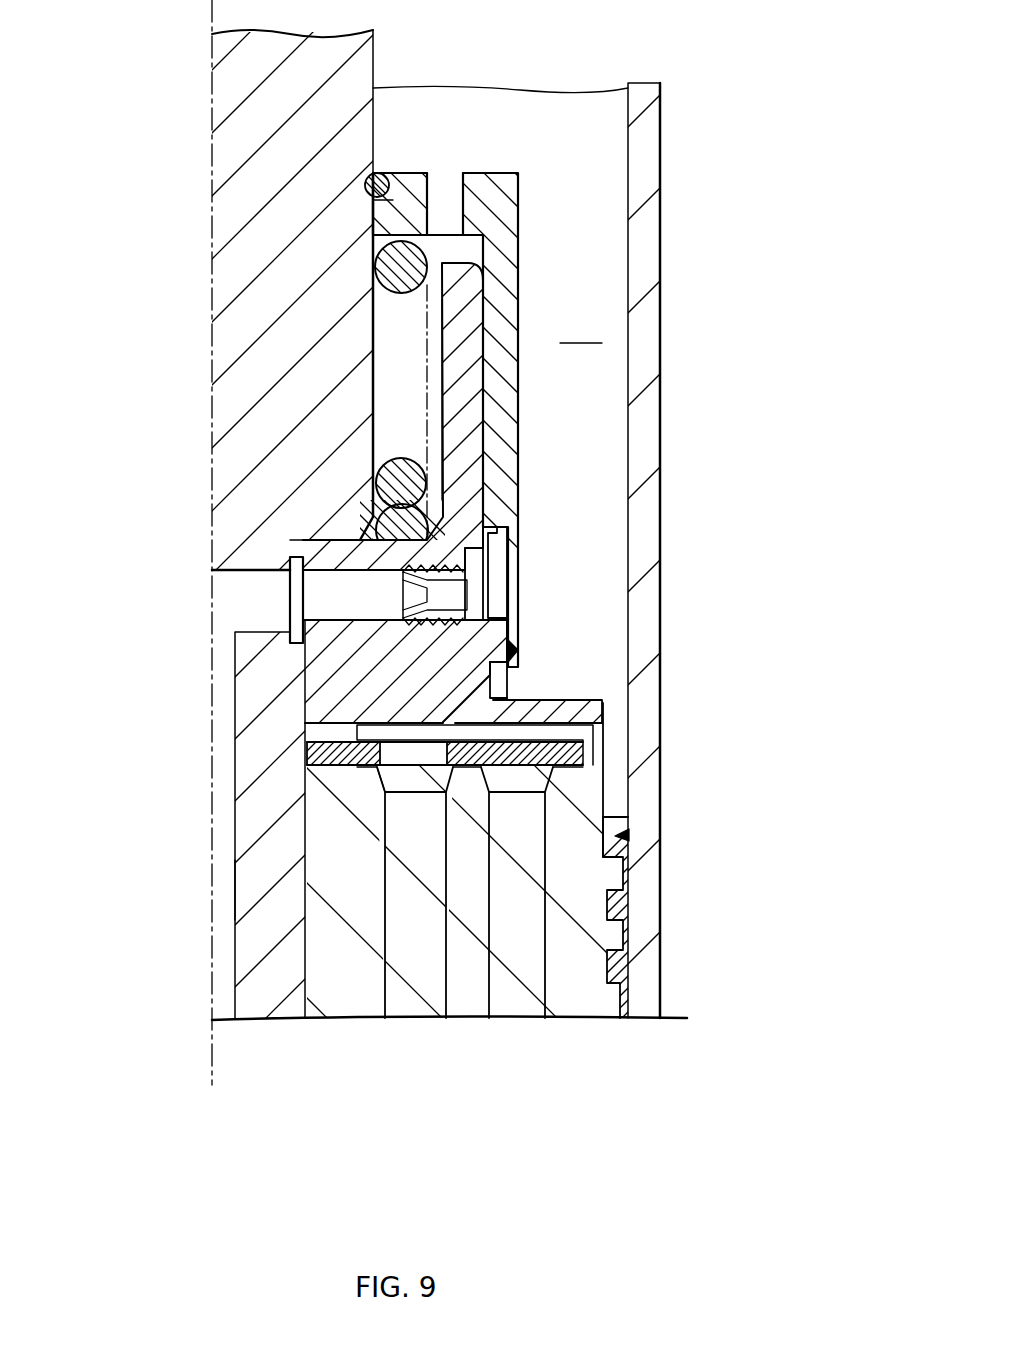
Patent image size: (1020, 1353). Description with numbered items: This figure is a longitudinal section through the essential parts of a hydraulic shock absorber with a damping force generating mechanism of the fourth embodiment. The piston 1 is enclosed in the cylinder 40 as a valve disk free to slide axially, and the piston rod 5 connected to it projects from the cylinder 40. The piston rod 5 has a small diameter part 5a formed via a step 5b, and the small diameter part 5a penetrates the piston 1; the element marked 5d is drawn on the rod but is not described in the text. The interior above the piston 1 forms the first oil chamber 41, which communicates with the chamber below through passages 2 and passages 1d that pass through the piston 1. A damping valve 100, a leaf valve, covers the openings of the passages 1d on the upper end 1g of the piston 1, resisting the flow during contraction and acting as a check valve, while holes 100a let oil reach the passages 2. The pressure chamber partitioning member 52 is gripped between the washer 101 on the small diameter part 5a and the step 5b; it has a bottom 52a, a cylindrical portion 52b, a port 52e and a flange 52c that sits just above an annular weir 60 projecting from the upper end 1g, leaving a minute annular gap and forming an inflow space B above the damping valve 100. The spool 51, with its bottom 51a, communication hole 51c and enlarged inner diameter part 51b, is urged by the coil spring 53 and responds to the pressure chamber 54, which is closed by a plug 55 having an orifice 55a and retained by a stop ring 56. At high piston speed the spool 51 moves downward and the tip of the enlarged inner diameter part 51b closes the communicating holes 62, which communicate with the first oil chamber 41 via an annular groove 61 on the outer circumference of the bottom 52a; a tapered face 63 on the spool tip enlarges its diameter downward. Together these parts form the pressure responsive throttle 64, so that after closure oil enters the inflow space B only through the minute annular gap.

The piston 1 is at (620, 847).
The passages 1d is at (535, 917).
The upper end of the piston 1g is at (605, 790).
The passages 2 is at (418, 985).
The piston rod 5 is at (215, 258).
The small diameter part 5a is at (262, 941).
The step 5b is at (320, 538).
The table side face 5d is at (215, 890).
The cylinder 40 is at (660, 178).
The first oil chamber 41 is at (581, 328).
The spool 51 is at (519, 276).
The bottom 51a is at (383, 214).
The enlarged inner diameter part 51b is at (496, 578).
The communication hole 51c is at (443, 190).
The pressure chamber partitioning member 52 is at (300, 547).
The bottom 52a is at (318, 660).
The cylindrical portion 52b is at (470, 396).
The flange 52c is at (598, 722).
The port 52e is at (303, 573).
The coil spring 53 is at (383, 278).
The pressure chamber 54 is at (495, 530).
The plug 55 is at (458, 550).
The orifice 55a is at (405, 604).
The stop ring 56 is at (379, 172).
The annular weir 60 is at (607, 745).
The annular groove 61 is at (523, 686).
The communicating holes 62 is at (485, 705).
The tapered face 63 is at (513, 655).
The pressure responsive throttle 64 is at (520, 677).
The damping valve 100 is at (305, 768).
The holes 100a is at (385, 787).
The washer 101 is at (303, 753).
The inflow space B is at (625, 832).